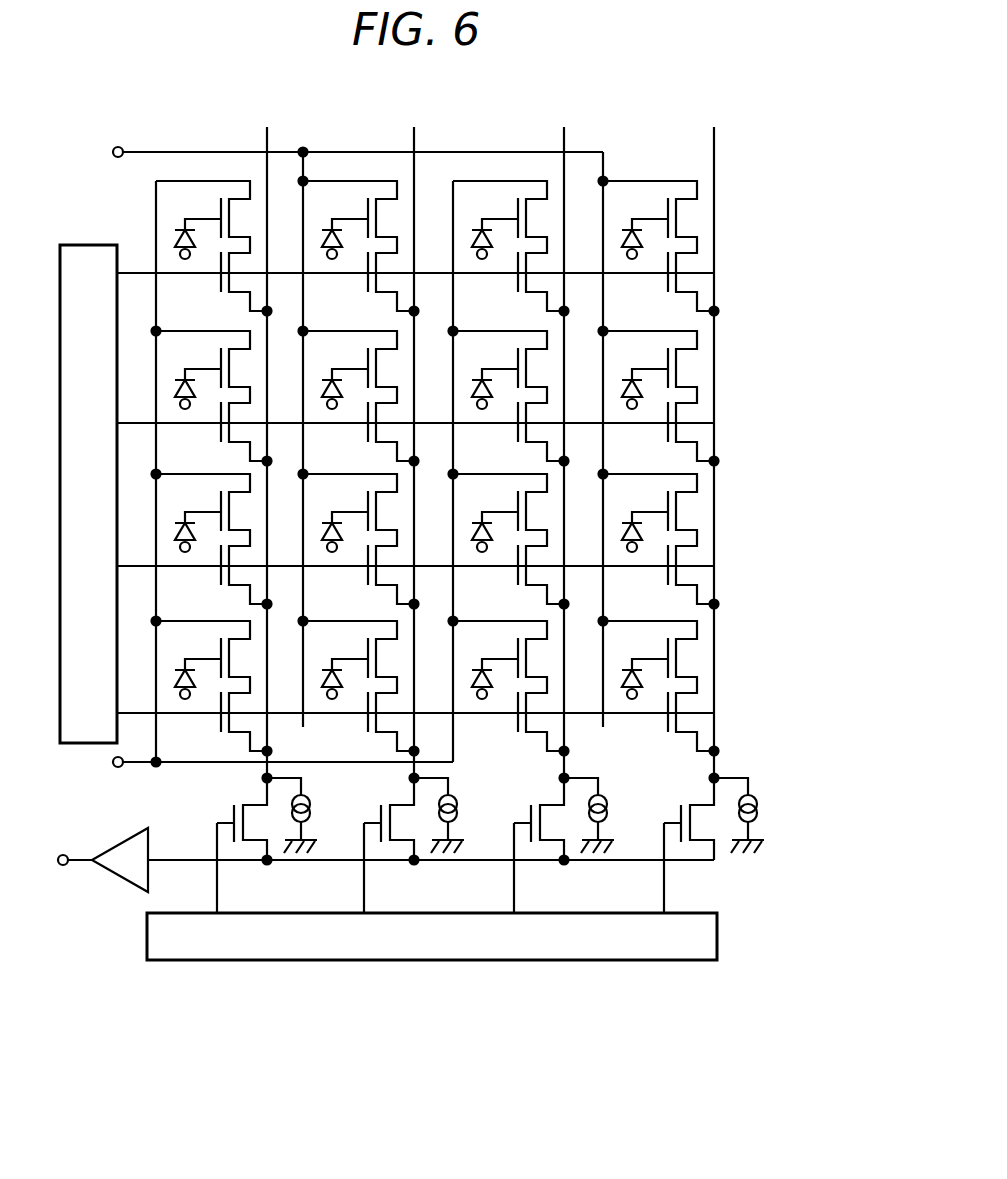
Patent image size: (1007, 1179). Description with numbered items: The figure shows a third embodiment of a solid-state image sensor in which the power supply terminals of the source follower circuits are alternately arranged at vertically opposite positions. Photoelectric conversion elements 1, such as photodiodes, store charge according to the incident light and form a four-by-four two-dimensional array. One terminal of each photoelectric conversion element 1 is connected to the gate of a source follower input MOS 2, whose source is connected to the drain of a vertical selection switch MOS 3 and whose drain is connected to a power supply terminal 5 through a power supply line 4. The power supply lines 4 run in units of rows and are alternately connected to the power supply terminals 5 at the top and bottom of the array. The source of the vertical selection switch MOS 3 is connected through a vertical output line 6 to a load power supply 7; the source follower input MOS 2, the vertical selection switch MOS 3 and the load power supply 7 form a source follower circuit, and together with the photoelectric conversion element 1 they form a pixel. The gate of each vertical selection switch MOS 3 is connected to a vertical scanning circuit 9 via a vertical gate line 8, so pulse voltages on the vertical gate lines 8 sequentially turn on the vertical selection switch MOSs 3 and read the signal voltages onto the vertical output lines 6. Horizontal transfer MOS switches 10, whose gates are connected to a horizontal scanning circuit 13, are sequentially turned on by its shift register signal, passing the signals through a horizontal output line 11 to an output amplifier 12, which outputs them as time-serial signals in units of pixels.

The photoelectric conversion element 1 is at (630, 230).
The source follower input MOS 2 is at (697, 218).
The vertical selection switch MOS 3 is at (698, 275).
The power supply line 4 is at (603, 220).
The power supply terminal 5 is at (121, 147).
The vertical output line 6 is at (716, 368).
The load power supply 7 is at (759, 806).
The vertical gate line 8 is at (175, 273).
The vertical scanning circuit 9 is at (92, 245).
The horizontal transfer MOS switch 10 is at (682, 814).
The horizontal output line 11 is at (194, 858).
The output amplifier 12 is at (118, 878).
The horizontal scanning circuit 13 is at (207, 962).